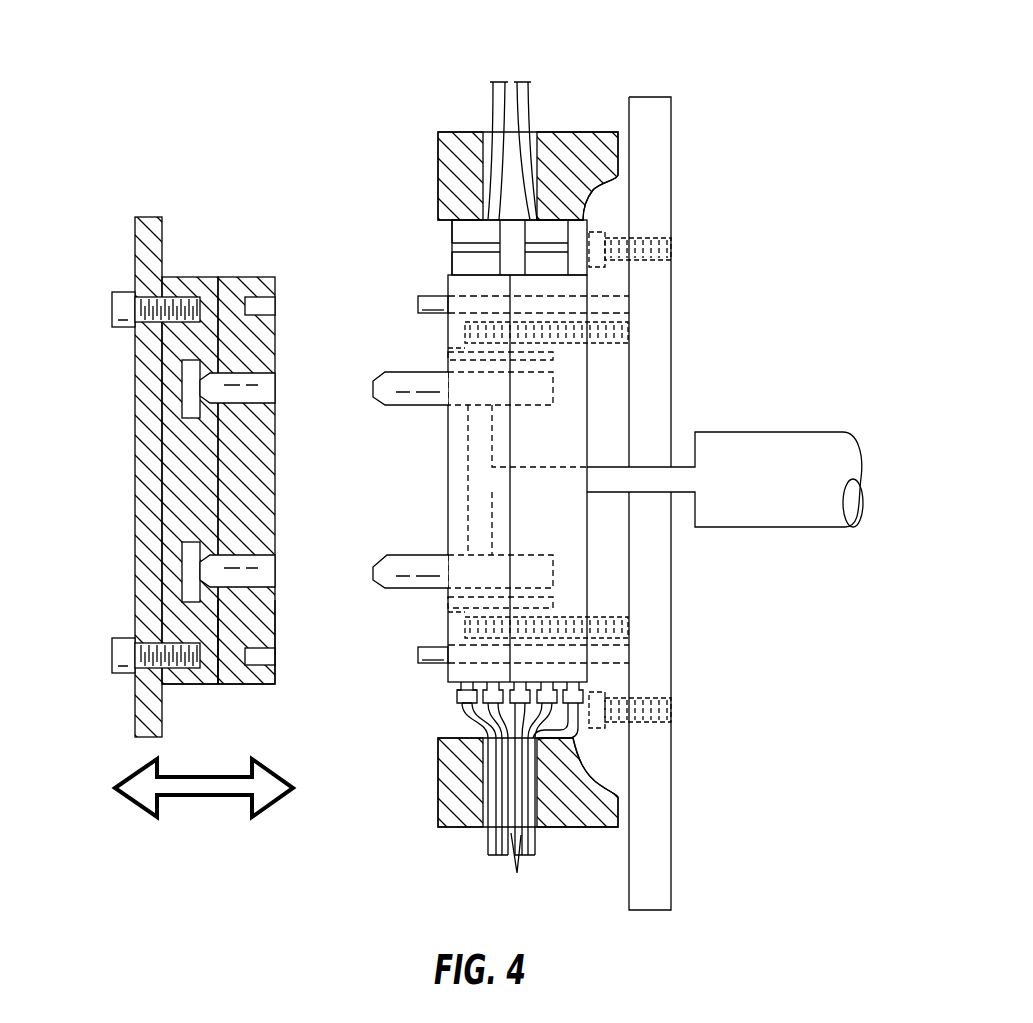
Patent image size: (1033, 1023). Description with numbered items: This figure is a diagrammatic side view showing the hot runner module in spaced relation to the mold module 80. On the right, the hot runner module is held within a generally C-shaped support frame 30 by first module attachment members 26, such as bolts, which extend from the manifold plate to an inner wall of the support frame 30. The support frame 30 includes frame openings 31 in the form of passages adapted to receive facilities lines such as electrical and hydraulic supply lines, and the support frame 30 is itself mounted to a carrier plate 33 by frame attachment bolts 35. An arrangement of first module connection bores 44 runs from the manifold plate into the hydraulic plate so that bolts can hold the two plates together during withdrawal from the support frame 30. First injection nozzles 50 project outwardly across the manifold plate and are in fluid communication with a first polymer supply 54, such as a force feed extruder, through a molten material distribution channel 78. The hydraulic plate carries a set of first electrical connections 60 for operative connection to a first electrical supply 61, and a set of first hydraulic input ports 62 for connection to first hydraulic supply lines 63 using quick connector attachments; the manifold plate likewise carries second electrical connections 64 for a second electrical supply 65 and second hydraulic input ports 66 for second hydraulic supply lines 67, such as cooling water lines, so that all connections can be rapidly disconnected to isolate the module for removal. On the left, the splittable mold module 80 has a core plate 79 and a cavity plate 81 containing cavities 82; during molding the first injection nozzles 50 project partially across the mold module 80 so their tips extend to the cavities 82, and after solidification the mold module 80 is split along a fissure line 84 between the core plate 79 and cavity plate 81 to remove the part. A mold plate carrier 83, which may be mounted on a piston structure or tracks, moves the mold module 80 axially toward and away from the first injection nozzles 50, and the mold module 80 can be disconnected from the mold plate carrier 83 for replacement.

The first module attachment members 26 is at (632, 330).
The support frame 30 is at (583, 132).
The frame openings 31 is at (530, 132).
The carrier plate 33 is at (672, 96).
The frame attachment bolts 35 is at (672, 252).
The first module connection bores 44 is at (557, 357).
The first injection nozzles 50 is at (382, 372).
The first polymer supply 54 is at (845, 432).
The first electrical connections 60 is at (555, 260).
The first electrical supply 61 is at (563, 235).
The first hydraulic input ports 62 is at (590, 713).
The first hydraulic supply lines 63 is at (587, 692).
The second electrical connections 64 is at (460, 258).
The second electrical supply 65 is at (460, 240).
The second hydraulic input ports 66 is at (460, 687).
The second hydraulic supply lines 67 is at (487, 710).
The molten material distribution channel 78 is at (495, 430).
The core plate 79 is at (276, 686).
The mold module 80 is at (262, 250).
The cavity plate 81 is at (182, 686).
The cavities 82 is at (190, 402).
The mold plate carrier 83 is at (135, 238).
The fissure line 84 is at (218, 686).